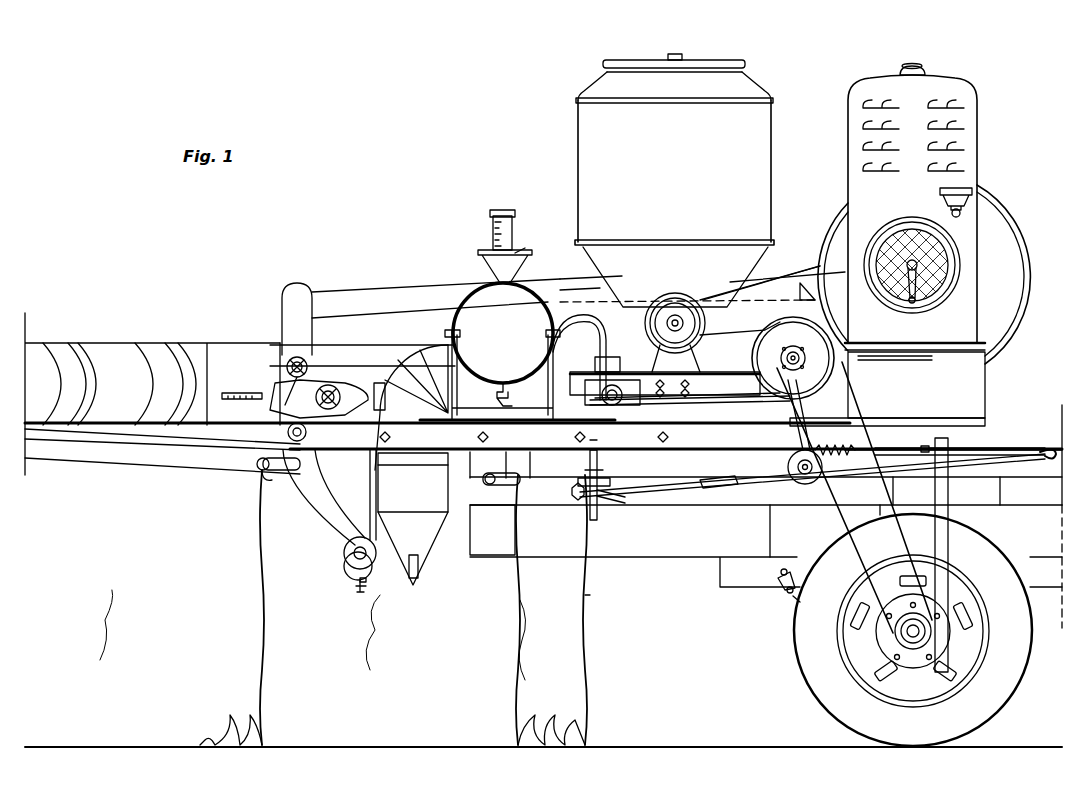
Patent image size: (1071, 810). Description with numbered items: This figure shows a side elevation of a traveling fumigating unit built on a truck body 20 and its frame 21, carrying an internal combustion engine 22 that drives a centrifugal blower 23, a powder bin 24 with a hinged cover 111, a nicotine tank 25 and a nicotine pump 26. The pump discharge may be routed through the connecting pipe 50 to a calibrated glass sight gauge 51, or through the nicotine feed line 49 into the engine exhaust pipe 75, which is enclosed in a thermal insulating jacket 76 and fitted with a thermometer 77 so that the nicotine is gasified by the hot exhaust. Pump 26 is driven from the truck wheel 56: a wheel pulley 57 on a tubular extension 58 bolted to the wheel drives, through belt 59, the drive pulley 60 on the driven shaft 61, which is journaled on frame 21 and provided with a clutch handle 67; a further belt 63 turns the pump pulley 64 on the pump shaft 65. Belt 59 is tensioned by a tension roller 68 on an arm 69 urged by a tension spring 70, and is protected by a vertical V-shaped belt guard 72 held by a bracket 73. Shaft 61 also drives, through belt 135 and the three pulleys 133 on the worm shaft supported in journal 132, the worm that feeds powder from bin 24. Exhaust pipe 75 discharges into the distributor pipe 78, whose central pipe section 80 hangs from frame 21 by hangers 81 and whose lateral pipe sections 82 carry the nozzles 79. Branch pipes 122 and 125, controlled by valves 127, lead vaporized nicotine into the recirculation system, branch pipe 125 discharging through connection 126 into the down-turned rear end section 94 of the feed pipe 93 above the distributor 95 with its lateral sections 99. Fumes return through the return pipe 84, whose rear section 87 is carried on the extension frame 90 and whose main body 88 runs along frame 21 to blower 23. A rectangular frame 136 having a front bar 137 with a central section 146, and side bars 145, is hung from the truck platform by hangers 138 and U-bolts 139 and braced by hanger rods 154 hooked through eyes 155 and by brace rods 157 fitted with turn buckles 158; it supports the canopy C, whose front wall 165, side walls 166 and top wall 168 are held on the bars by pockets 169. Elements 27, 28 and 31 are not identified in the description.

The truck body 20 is at (1010, 465).
The frame 21 is at (982, 420).
The internal combustion engine 22 is at (930, 192).
The centrifugal blower 23 is at (985, 232).
The bin 24 is at (748, 152).
The tank 25 is at (482, 306).
The pump 26 is at (607, 358).
The funnel 27 is at (512, 263).
The funnel neck 28 is at (480, 250).
The drain fitting 31 is at (512, 406).
The nicotine feed line 49 is at (598, 345).
The connecting pipe 50 is at (560, 302).
The calibrated glass sight gauge 51 is at (512, 238).
The truck wheel 56 is at (850, 655).
The wheel pulley 57 is at (905, 642).
The tubular extension 58 is at (880, 638).
The belt 59 is at (842, 513).
The drive pulley 60 is at (832, 362).
The driven shaft 61 is at (792, 360).
The belt 63 is at (692, 404).
The pump pulley 64 is at (628, 404).
The pump shaft 65 is at (618, 410).
The handle 67 is at (892, 362).
The tension roller 68 is at (803, 486).
The arm 69 is at (792, 392).
The tension spring 70 is at (850, 450).
The V-shaped belt guard 72 is at (942, 540).
The bracket 73 is at (925, 446).
The engine exhaust pipe 75 is at (810, 288).
The thermal insulating jacket 76 is at (792, 300).
The thermometer 77 is at (233, 393).
The distributor pipe 78 is at (346, 572).
The nozzles 79 is at (370, 582).
The central pipe section 80 is at (358, 580).
The hangers 81 is at (372, 506).
The lateral pipe sections 82 is at (343, 555).
The return pipe 84 is at (230, 360).
The rear section 87 is at (118, 368).
The main body 88 is at (400, 356).
The extension frame 90 is at (226, 430).
The feed pipe 93 is at (728, 408).
The rear end section 94 is at (392, 396).
The distributor 95 is at (425, 522).
The lateral sections 99 is at (416, 537).
The hinged cover 111 is at (720, 61).
The branch pipe 122 is at (400, 300).
The branch pipe 125 is at (356, 394).
The connection 126 is at (358, 456).
The valves 127 is at (286, 433).
The journal 132 is at (672, 315).
The pulleys 133 is at (695, 320).
The belt 135 is at (712, 410).
The rectangular frame 136 is at (262, 470).
The front bar 137 is at (576, 482).
The hangers 138 is at (600, 520).
The U-bolts 139 is at (606, 496).
The side bars 145 is at (262, 463).
The central section 146 is at (572, 492).
The hanger rods 154 is at (598, 470).
The eyes 155 is at (640, 490).
The brace rods 157 is at (948, 456).
The turn buckles 158 is at (575, 437).
The front wall 165 is at (586, 596).
The side walls 166 is at (230, 697).
The top wall 168 is at (402, 458).
The pockets 169 is at (260, 474).
The canopy C is at (340, 676).